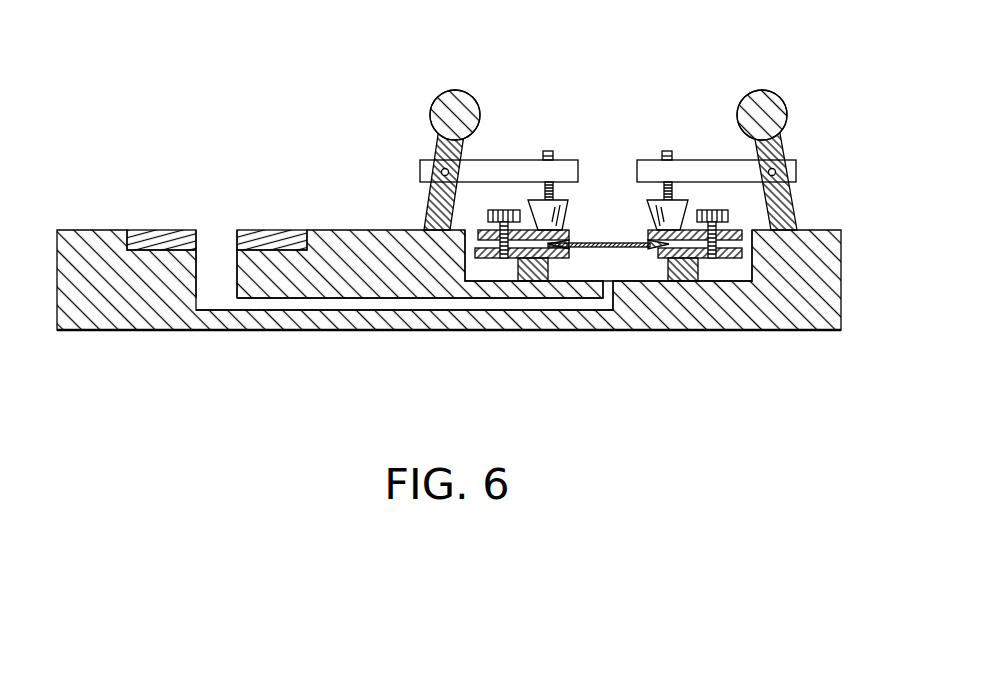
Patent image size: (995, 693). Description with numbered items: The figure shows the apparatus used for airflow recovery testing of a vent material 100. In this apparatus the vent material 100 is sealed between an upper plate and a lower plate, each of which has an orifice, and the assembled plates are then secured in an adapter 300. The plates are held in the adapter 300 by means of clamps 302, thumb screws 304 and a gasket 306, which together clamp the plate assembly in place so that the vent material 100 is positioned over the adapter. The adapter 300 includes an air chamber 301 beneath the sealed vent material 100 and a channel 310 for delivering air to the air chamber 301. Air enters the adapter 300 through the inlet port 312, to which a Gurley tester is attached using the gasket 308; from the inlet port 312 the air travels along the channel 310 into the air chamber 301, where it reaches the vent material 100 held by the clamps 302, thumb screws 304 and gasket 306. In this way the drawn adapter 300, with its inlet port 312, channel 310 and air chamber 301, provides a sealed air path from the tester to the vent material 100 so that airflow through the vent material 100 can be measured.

The adapter 300 is at (182, 67).
The clamps 302 is at (476, 100).
The thumb screws 304 is at (548, 151).
The vent material 100 is at (613, 243).
The gasket 308 is at (170, 240).
The inlet port 312 is at (218, 245).
The channel 310 is at (217, 288).
The air chamber 301 is at (580, 265).
The gasket 306 is at (680, 272).